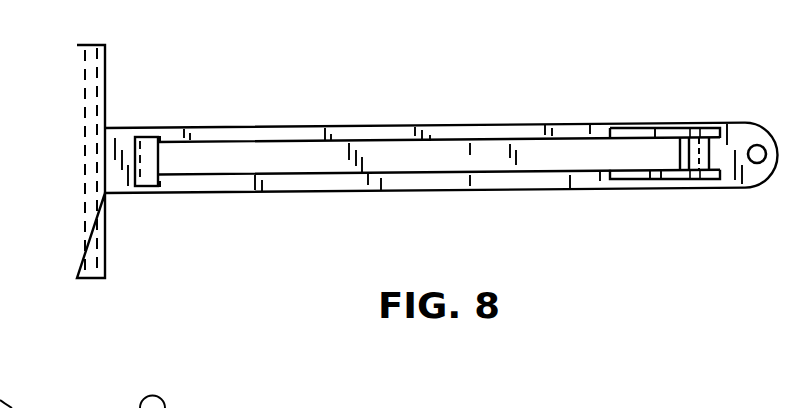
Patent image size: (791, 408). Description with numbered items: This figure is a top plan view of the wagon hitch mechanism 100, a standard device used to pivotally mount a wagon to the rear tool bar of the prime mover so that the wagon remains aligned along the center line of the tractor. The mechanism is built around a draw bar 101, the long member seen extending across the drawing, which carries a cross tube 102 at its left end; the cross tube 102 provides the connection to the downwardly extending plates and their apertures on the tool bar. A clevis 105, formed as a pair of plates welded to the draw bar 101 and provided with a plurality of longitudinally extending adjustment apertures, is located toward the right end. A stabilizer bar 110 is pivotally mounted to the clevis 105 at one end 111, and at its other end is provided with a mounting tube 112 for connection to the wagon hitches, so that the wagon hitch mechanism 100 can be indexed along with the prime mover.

The wagon hitch mechanism 100 is at (572, 77).
The draw bar 101 is at (475, 128).
The cross tube 102 is at (100, 90).
The clevis 105 is at (645, 132).
The stabilizer bar 110 is at (316, 146).
The one end 111 is at (705, 172).
The mounting tube 112 is at (150, 140).